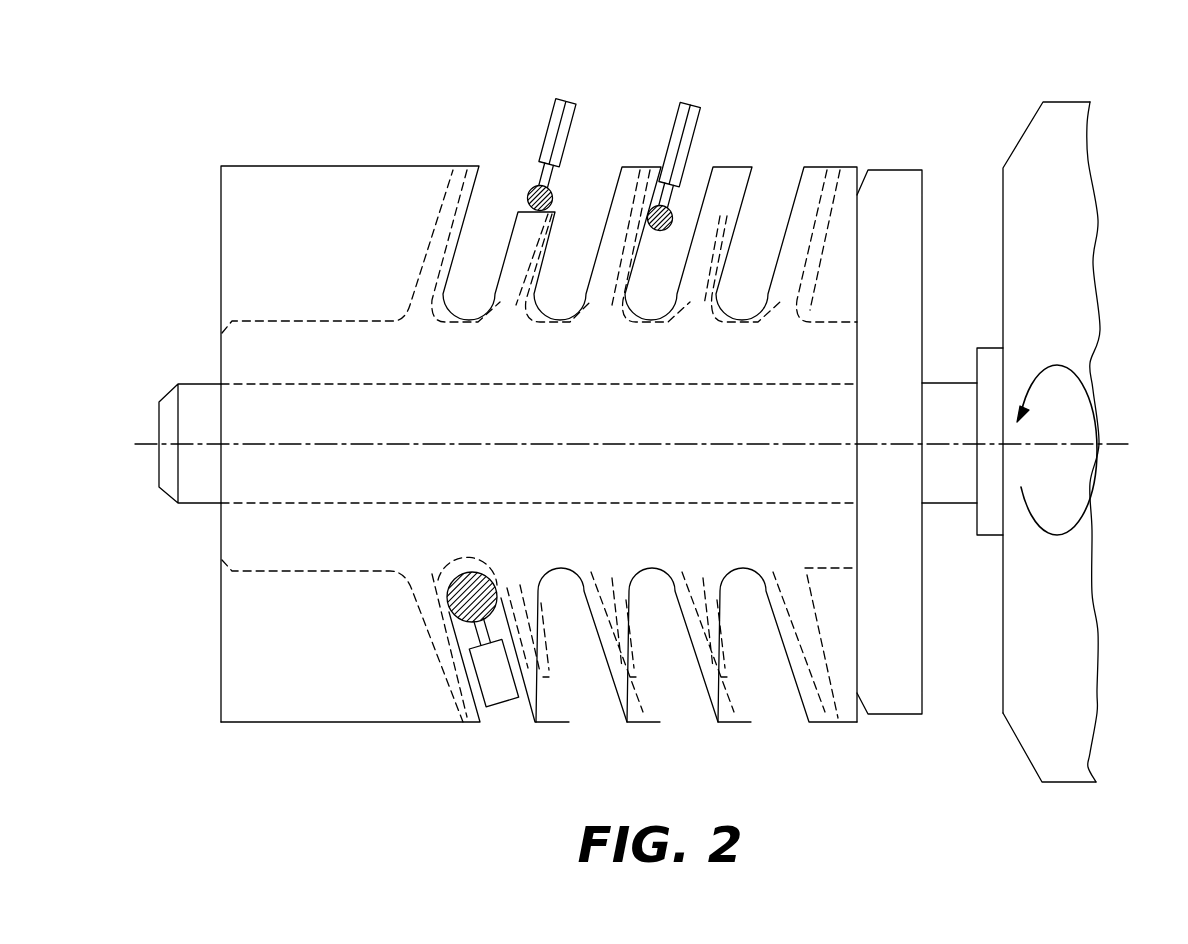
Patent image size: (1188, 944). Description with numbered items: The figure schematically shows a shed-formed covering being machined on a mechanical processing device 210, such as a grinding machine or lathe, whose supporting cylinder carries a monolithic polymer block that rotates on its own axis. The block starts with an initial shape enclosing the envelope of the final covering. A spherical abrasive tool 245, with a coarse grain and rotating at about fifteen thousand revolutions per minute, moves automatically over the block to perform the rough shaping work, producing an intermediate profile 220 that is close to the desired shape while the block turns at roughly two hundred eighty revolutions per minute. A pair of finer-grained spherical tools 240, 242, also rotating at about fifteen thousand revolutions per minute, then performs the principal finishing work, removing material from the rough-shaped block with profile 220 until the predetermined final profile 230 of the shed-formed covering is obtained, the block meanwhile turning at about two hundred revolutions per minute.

The mechanical processing device 210 is at (1057, 115).
The intermediate profile 220 is at (293, 166).
The predetermined final profile 230 is at (837, 170).
The spherical tool 240 is at (702, 113).
The spherical tool 242 is at (580, 113).
The spherical abrasive tool 245 is at (495, 706).